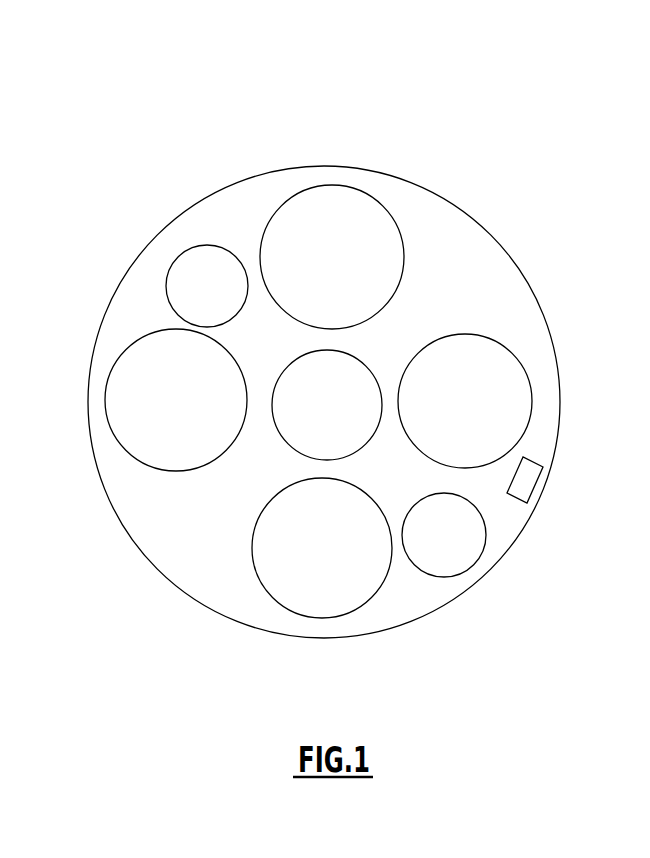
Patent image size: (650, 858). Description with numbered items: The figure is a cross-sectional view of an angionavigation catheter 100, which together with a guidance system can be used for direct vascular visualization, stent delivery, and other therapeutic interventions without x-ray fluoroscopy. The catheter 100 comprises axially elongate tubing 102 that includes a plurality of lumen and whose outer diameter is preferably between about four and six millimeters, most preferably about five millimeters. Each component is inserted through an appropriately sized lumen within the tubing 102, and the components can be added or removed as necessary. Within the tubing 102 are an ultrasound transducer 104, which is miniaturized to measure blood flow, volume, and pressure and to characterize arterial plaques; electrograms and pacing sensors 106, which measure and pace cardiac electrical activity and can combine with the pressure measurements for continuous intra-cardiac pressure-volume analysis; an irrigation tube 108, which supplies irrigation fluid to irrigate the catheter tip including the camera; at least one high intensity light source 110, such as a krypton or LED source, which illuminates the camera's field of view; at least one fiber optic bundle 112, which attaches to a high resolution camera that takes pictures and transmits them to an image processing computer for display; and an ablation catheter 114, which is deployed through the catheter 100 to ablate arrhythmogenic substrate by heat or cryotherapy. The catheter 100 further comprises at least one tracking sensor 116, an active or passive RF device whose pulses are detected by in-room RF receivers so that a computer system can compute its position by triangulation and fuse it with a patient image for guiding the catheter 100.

The angionavigation catheter 100 is at (252, 122).
The axially elongate tubing 102 is at (103, 490).
The ultrasound transducer 104 is at (182, 250).
The electrograms and pacing sensors 106 is at (347, 187).
The irrigation tube 108 is at (472, 565).
The high intensity light source 110 is at (297, 613).
The fiber optic bundle 112 is at (117, 365).
The ablation catheter 114 is at (368, 367).
The tracking sensor 116 is at (535, 473).